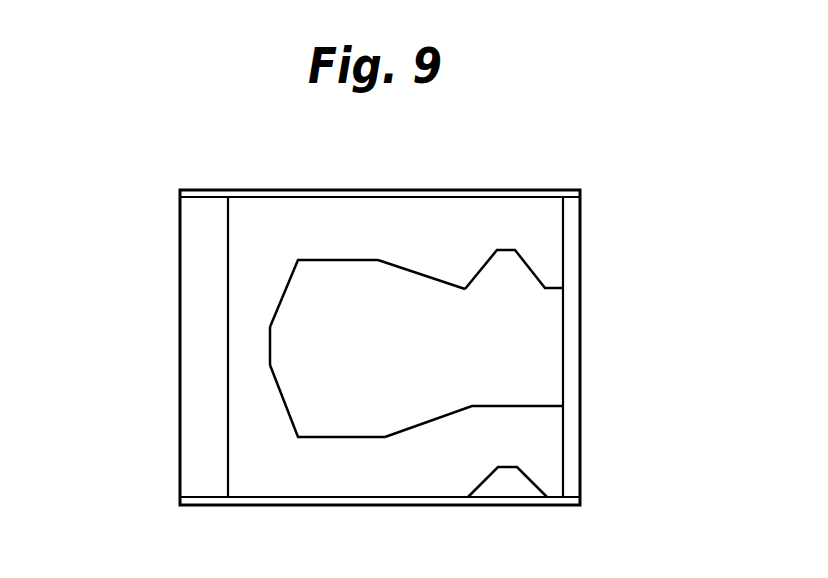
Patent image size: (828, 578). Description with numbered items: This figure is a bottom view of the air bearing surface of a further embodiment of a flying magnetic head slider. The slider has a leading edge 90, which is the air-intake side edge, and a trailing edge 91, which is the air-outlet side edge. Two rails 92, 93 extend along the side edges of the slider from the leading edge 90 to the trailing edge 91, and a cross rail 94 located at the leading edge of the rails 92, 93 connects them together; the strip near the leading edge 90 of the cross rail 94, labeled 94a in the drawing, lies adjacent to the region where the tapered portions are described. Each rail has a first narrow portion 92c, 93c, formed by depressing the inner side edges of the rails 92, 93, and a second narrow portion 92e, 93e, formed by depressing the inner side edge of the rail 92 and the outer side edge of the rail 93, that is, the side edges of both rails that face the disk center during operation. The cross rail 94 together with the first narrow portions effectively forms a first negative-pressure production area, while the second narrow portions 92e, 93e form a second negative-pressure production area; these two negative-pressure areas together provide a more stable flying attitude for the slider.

The leading edge 90 is at (178, 417).
The trailing edge 91 is at (580, 329).
The rail 92 is at (438, 220).
The first narrow portion 92c is at (321, 241).
The second narrow portion 92e is at (508, 233).
The rail 93 is at (442, 475).
The first narrow portion 93c is at (320, 463).
The second narrow portion 93e is at (507, 443).
The cross rail 94 is at (248, 357).
The edge strip 94a is at (198, 268).